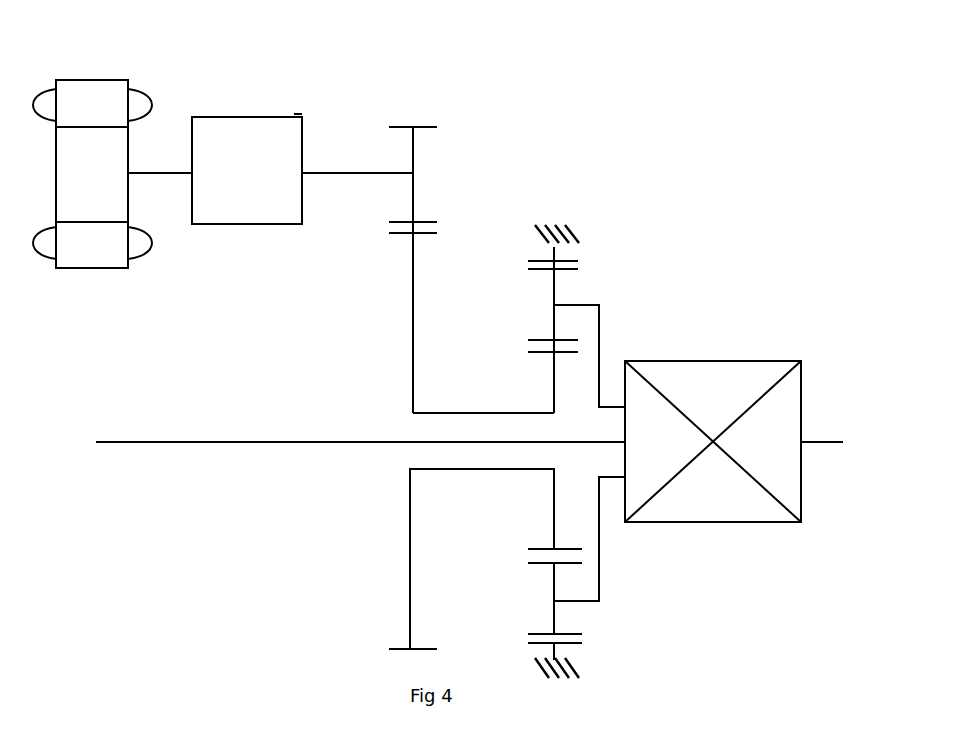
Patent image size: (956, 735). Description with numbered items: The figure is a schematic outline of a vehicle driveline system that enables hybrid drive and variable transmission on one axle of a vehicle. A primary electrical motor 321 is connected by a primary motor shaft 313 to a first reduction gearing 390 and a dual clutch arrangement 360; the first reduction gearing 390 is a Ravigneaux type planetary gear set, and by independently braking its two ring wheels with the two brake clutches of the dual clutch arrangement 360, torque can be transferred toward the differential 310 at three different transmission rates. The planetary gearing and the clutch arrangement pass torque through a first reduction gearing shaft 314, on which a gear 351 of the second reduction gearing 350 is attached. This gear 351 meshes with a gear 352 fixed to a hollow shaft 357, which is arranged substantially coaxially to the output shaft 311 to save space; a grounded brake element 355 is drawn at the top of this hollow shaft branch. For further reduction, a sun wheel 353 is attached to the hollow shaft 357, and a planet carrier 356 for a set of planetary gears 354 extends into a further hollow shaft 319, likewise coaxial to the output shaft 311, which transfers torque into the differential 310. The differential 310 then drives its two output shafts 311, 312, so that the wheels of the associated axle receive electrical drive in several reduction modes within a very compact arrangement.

The differential 310 is at (752, 358).
The output shaft 311 is at (188, 443).
The output shaft 312 is at (827, 443).
The primary motor shaft 313 is at (155, 172).
The first reduction gearing shaft 314 is at (337, 173).
The hollow shaft 319 is at (608, 407).
The primary electrical motor 321 is at (94, 78).
The second reduction gearing 350 is at (425, 116).
The gear 351 is at (415, 203).
The gear 352 is at (415, 372).
The sun wheel 353 is at (552, 507).
The planetary gears 354 is at (555, 622).
The second brake 355 is at (552, 253).
The planet carrier 356 is at (582, 603).
The hollow shaft 357 is at (472, 417).
The dual clutch arrangement 360 is at (238, 102).
The first reduction gearing 390 is at (291, 110).